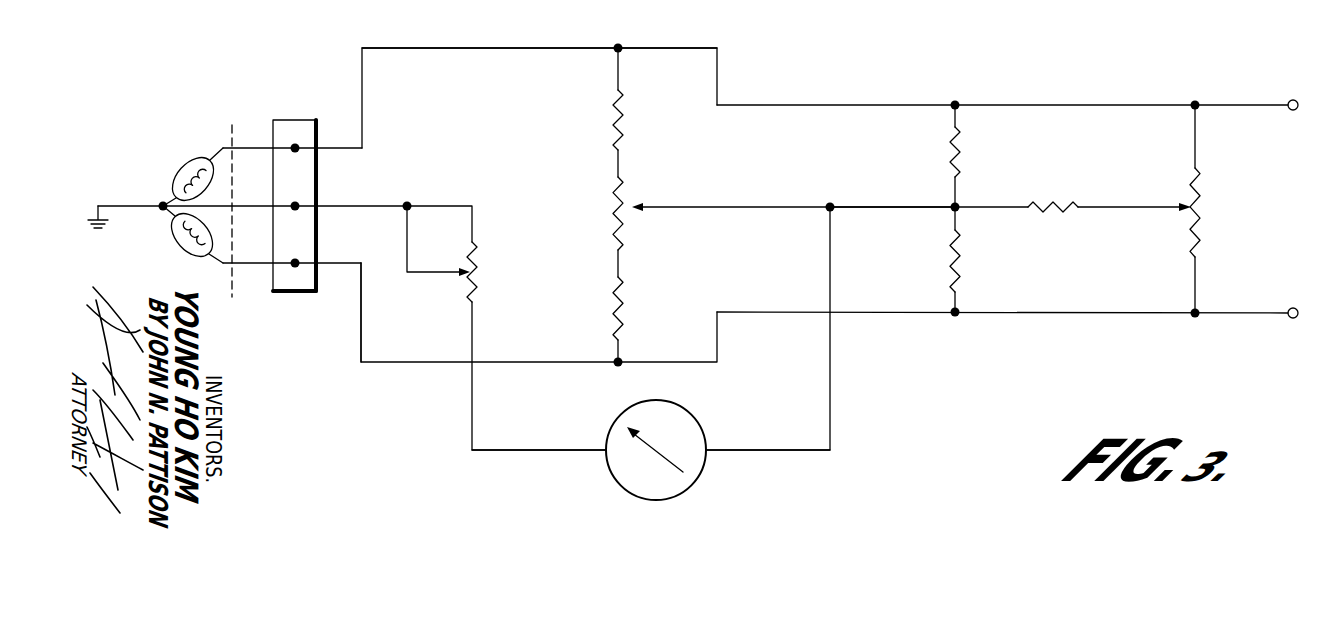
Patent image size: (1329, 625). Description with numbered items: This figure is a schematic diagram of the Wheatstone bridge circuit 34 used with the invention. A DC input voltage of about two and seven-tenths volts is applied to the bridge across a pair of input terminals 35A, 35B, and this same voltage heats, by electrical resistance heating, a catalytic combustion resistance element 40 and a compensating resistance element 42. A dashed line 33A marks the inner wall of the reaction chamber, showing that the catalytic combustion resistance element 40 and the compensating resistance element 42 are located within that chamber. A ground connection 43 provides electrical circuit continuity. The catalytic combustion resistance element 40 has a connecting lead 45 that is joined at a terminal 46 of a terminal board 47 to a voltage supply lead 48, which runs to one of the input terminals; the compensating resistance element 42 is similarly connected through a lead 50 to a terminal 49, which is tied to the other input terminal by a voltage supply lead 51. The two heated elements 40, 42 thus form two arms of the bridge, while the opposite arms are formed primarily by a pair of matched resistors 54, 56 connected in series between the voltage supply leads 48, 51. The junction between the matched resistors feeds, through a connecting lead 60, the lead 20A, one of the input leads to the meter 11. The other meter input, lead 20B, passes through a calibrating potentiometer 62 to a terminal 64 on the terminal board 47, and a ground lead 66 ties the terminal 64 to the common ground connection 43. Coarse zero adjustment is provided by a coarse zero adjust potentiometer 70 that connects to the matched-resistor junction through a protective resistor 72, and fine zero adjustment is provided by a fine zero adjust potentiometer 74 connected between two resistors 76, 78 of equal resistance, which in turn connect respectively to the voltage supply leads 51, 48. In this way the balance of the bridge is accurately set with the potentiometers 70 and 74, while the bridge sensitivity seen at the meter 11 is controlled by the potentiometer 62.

The meter 11 is at (610, 475).
The lead 20A is at (785, 451).
The lead 20B is at (510, 451).
The inner wall of the reaction chamber 33A is at (232, 124).
The Wheatstone bridge circuit 34 is at (855, 96).
The input terminal 35A is at (1293, 110).
The input terminal 35B is at (1293, 308).
The catalytic combustion resistance element 40 is at (187, 253).
The compensating resistance element 42 is at (192, 165).
The ground connection 43 is at (118, 205).
The connecting lead 45 is at (256, 264).
The terminal 46 is at (294, 265).
The terminal board 47 is at (318, 170).
The voltage supply lead 48 is at (361, 335).
The terminal 49 is at (295, 146).
The lead 50 is at (248, 147).
The voltage supply lead 51 is at (515, 48).
The matched resistor 54 is at (962, 140).
The matched resistor 56 is at (950, 256).
The connecting lead 60 is at (890, 206).
The calibrating potentiometer 62 is at (480, 262).
The terminal 64 is at (297, 208).
The ground lead 66 is at (163, 204).
The coarse zero adjust potentiometer 70 is at (1192, 178).
The protective resistor 72 is at (1048, 210).
The fine zero adjust potentiometer 74 is at (616, 184).
The resistor 76 is at (616, 94).
The resistor 78 is at (616, 286).